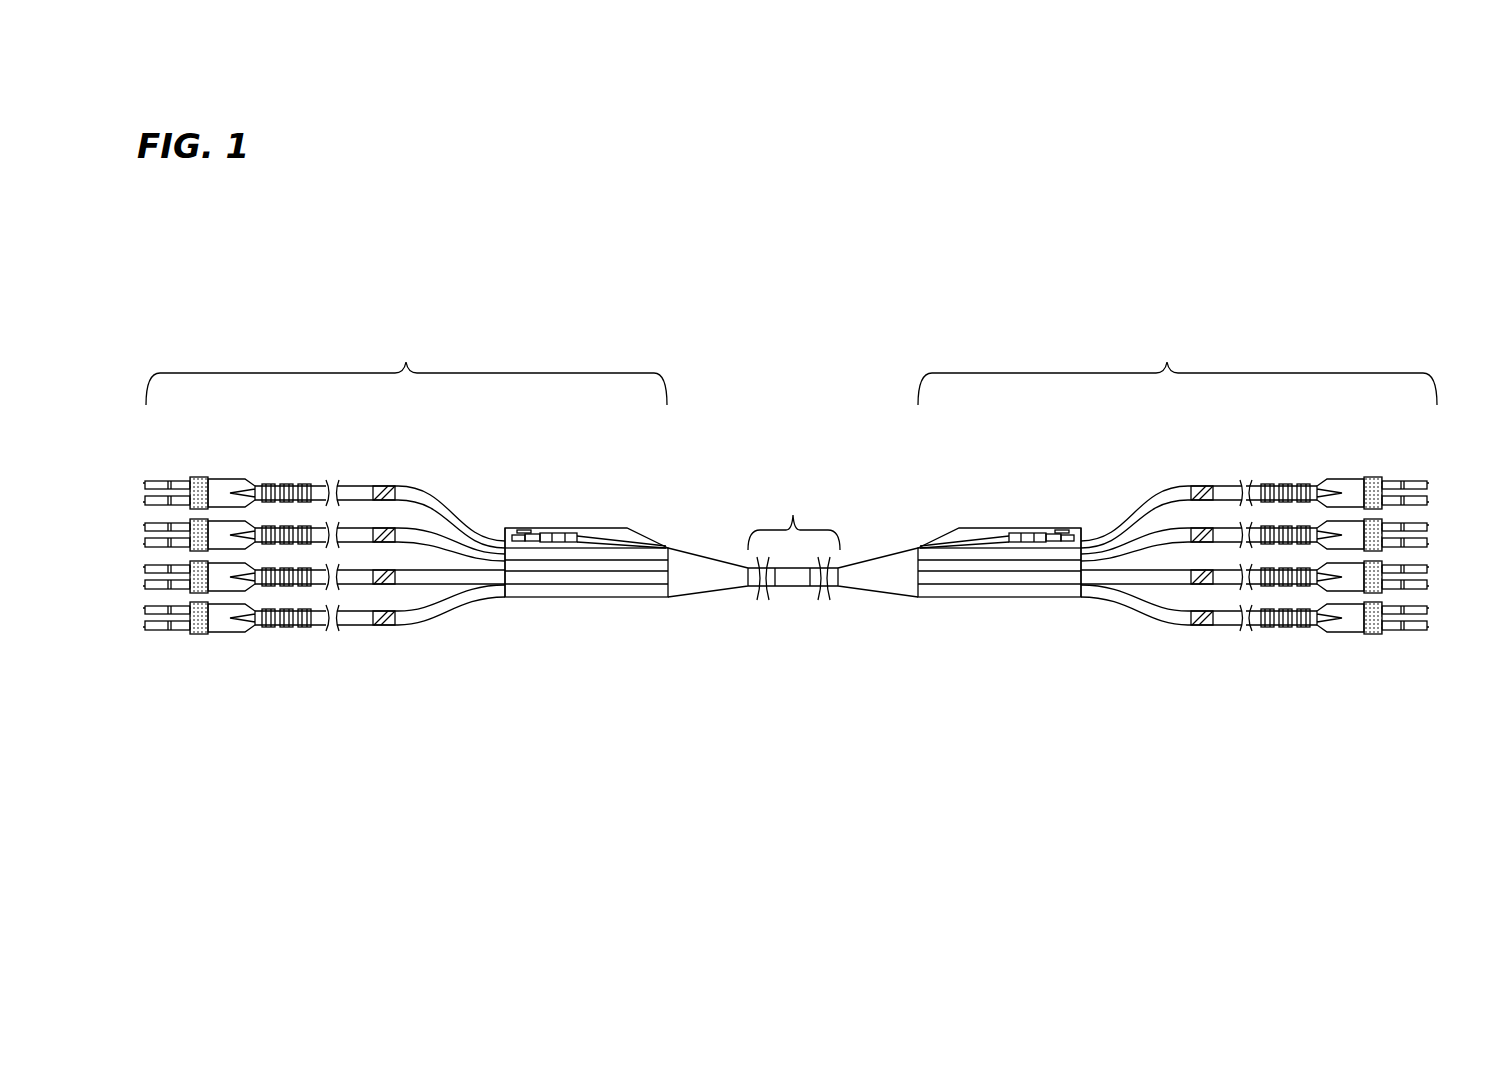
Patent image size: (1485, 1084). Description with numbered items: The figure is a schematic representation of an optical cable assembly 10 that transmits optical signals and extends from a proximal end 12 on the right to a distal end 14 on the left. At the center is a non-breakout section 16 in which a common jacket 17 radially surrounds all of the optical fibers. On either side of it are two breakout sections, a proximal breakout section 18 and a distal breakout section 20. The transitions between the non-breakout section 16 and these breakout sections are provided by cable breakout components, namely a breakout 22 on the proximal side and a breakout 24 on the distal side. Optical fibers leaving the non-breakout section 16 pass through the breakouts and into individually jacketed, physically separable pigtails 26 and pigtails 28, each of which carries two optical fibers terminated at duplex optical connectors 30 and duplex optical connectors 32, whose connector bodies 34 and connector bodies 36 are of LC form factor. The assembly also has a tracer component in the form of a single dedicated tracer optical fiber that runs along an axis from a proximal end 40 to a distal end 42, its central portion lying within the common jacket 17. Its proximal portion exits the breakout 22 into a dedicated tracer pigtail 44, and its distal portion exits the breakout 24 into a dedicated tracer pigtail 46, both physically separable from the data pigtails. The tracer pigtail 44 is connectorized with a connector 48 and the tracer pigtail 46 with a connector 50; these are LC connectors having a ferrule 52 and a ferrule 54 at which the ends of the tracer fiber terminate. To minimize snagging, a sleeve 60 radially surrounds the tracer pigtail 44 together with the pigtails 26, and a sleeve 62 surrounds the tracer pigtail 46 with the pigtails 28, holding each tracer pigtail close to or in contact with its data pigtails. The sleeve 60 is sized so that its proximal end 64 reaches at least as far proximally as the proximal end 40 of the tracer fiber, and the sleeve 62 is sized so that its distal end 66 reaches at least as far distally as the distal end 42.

The cable assembly 10 is at (1303, 291).
The proximal end 12 is at (1441, 527).
The distal end 14 is at (132, 517).
The non-breakout section 16 is at (793, 512).
The common jacket 17 is at (793, 588).
The breakout section 18 is at (1167, 362).
The breakout section 20 is at (406, 362).
The breakout 22 is at (874, 592).
The breakout 24 is at (711, 592).
The pigtails 26 is at (1217, 534).
The pigtails 28 is at (347, 495).
The duplex optical connector 30 is at (1362, 466).
The duplex optical connector 32 is at (210, 464).
The connector body 34 is at (1413, 492).
The connector body 36 is at (162, 487).
The proximal end of tracer optical fiber 40 is at (1076, 531).
The distal end of tracer optical fiber 42 is at (506, 538).
The tracer pigtail 44 is at (989, 533).
The tracer pigtail 46 is at (596, 535).
The connector 48 is at (1064, 528).
The connector 50 is at (521, 522).
The ferrule 52 is at (1084, 536).
The ferrule 54 is at (506, 540).
The sleeve 60 is at (957, 528).
The sleeve 62 is at (618, 529).
The proximal end of sleeve 64 is at (1081, 598).
The distal end of sleeve 66 is at (505, 598).